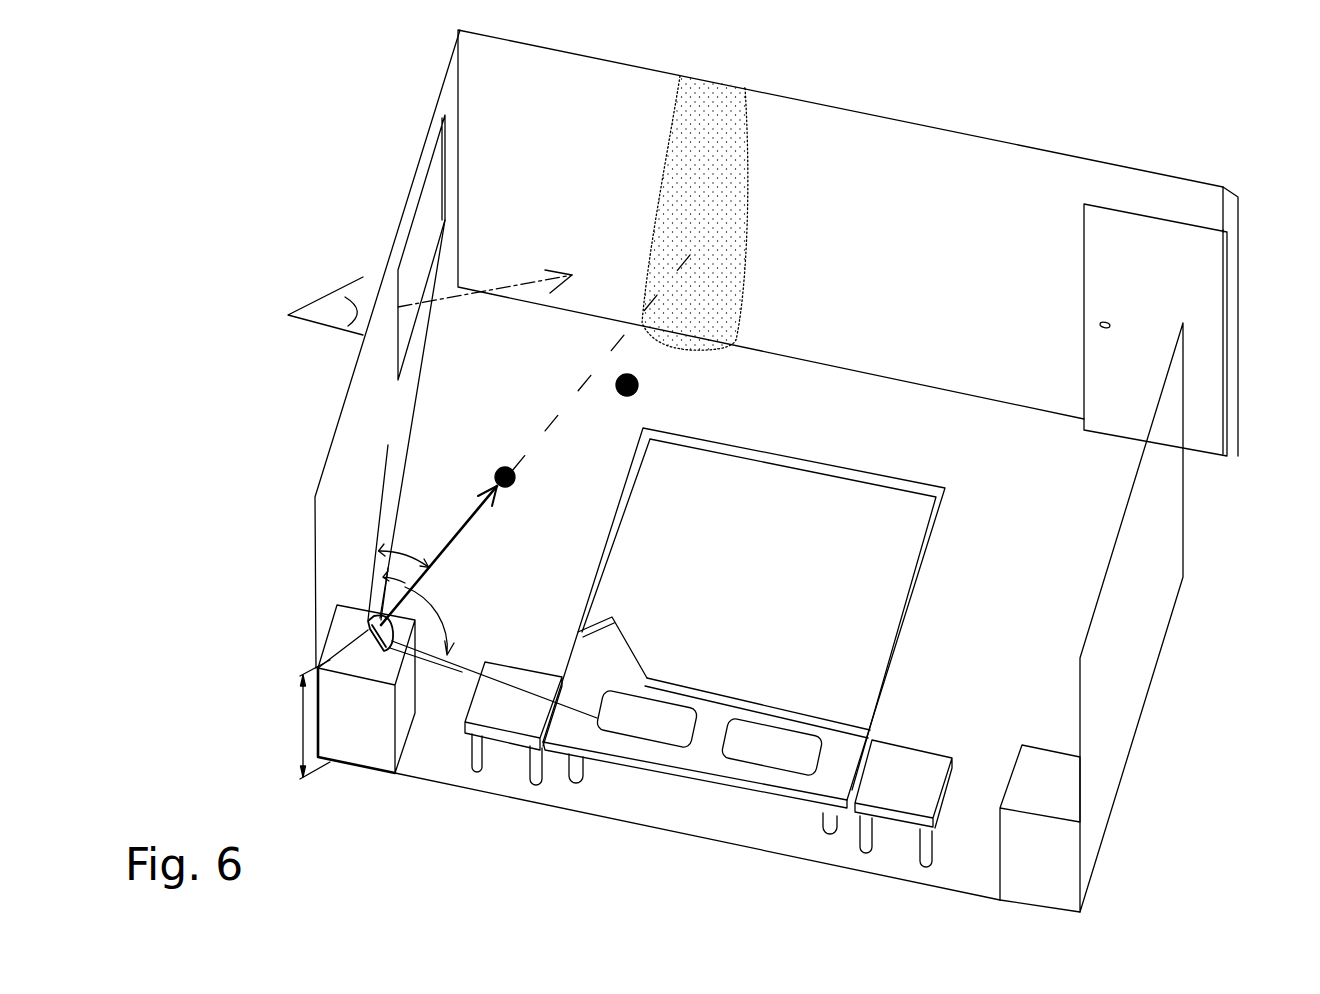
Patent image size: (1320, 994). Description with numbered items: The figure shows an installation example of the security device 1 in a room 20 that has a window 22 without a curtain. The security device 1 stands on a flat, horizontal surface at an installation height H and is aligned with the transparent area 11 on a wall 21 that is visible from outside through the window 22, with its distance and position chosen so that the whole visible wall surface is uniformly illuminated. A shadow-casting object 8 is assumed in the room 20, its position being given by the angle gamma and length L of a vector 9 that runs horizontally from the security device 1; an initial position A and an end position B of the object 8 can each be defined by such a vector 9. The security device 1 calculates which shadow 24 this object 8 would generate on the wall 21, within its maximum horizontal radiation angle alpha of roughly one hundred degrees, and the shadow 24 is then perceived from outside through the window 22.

The security device 1 is at (368, 626).
The shadow-casting object 8 is at (494, 475).
The vector 9 is at (465, 520).
The transparent area 11 is at (393, 637).
The room 20 is at (1013, 572).
The wall 21 is at (853, 227).
The window 22 is at (428, 228).
The shadow 24 is at (668, 167).